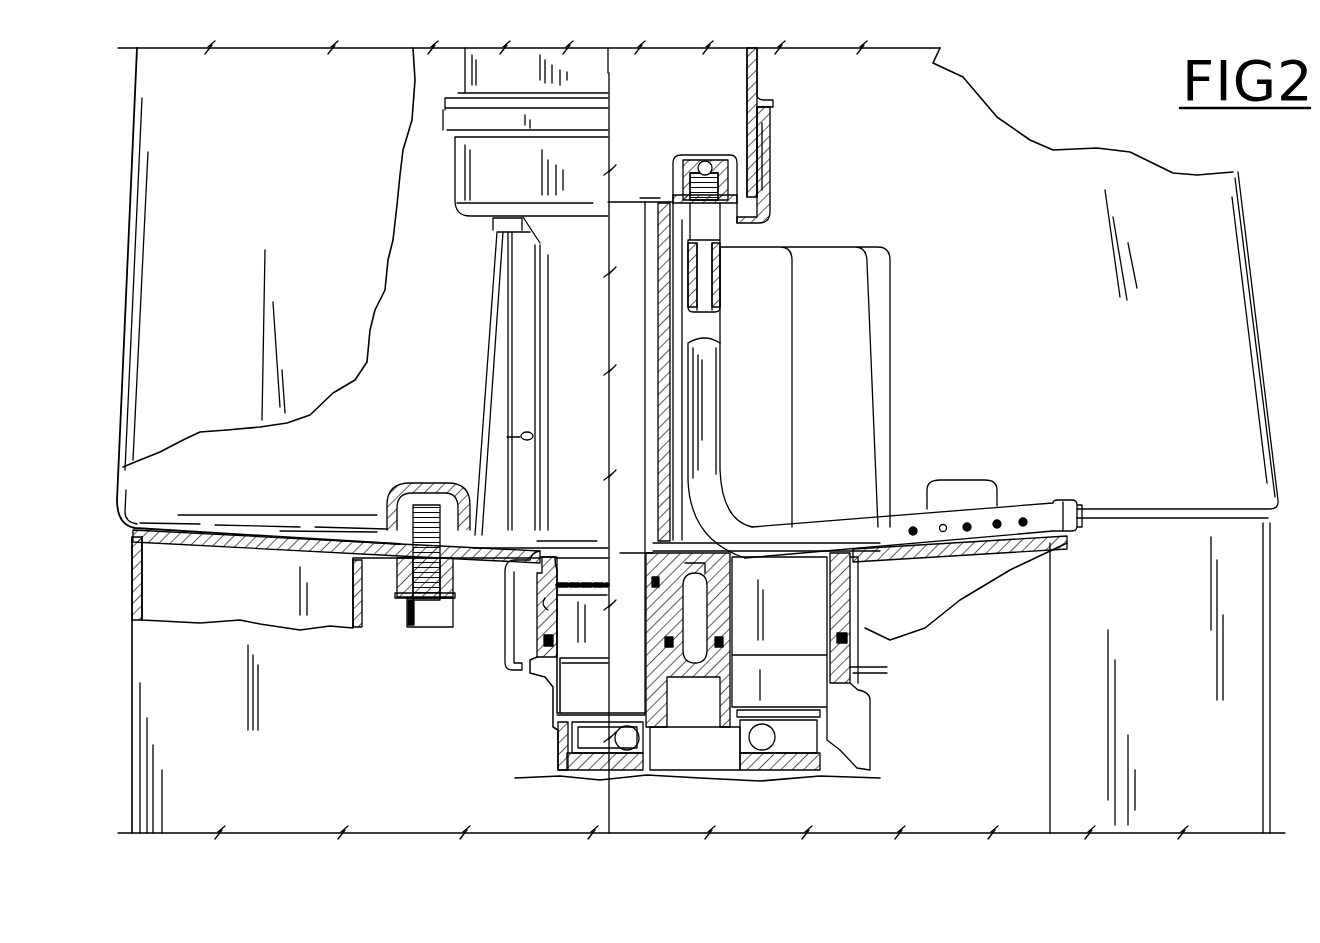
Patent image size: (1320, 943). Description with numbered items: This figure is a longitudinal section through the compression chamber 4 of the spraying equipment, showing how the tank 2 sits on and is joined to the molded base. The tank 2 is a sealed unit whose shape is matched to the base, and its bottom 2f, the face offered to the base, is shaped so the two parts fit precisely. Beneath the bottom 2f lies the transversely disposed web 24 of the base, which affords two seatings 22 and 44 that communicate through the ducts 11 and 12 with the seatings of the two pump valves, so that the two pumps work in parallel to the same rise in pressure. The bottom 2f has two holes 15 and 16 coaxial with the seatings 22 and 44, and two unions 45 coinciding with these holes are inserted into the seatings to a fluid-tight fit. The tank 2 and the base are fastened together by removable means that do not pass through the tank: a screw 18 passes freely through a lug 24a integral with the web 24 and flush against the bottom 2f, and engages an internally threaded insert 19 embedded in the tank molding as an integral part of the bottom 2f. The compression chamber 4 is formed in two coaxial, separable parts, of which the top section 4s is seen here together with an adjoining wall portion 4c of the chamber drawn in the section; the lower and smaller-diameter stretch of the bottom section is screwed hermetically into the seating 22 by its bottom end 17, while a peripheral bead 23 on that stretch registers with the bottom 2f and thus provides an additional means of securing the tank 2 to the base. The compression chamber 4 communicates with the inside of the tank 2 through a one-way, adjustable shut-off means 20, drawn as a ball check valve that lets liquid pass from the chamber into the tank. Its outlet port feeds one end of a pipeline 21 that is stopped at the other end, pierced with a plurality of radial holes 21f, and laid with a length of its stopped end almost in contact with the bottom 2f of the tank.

The tank 2 is at (123, 492).
The bottom of the tank 2f is at (505, 558).
The compression chamber 4 is at (778, 82).
The top section of the compression chamber 4s is at (748, 70).
The pipe cup 4c is at (772, 178).
The duct 11 is at (764, 748).
The duct 12 is at (632, 748).
The hole 15 is at (845, 603).
The hole 16 is at (558, 592).
The bottom end of the bottom section 17 is at (597, 693).
The removable fastening means (screw) 18 is at (422, 593).
The removable fastening means (internally threaded insert) 19 is at (394, 495).
The one-way adjustable shut-off means (ball check valve) 20 is at (724, 145).
The pipeline 21 is at (1014, 493).
The radial holes 21f is at (1027, 522).
The seating 22 is at (557, 603).
The peripheral bead 23 is at (512, 540).
The web 24 is at (378, 578).
The lug 24a is at (437, 580).
The seating 44 is at (817, 693).
The unions 45 is at (540, 628).